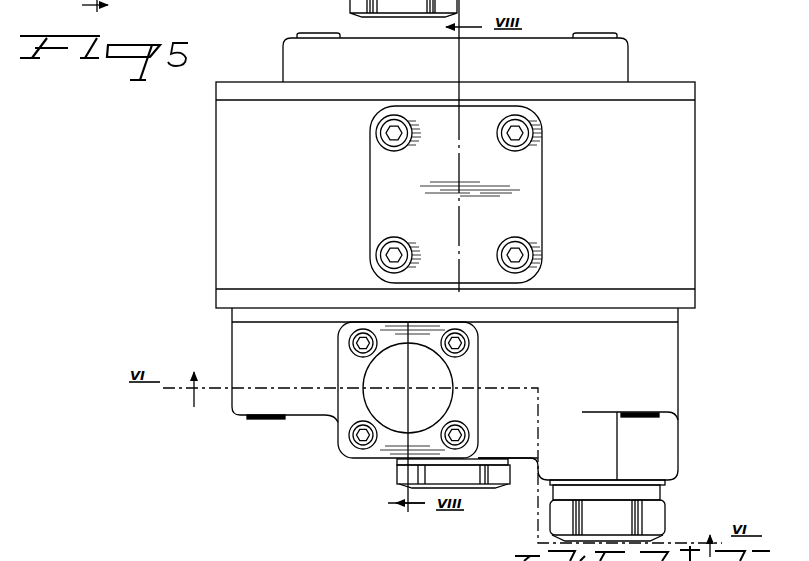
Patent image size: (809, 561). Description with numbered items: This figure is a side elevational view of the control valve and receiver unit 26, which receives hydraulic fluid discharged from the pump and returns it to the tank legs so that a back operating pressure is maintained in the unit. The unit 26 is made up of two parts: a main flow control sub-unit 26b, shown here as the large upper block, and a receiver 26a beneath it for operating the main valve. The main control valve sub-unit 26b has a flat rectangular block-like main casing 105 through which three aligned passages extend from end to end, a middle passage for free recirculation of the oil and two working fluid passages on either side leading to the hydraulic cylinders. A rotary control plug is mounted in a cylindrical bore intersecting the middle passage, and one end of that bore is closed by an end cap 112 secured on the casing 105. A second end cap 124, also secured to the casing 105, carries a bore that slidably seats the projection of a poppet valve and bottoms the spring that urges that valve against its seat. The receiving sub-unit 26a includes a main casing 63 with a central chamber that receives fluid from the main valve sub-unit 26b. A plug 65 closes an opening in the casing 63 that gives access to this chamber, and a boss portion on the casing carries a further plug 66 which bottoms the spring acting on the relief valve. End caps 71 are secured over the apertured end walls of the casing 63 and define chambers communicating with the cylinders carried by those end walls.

The end cap 112 is at (608, 62).
The control valve and receiver unit 26 is at (702, 106).
The main casing 105 is at (660, 146).
The main flow control sub-unit 26b is at (672, 222).
The end cap 124 is at (520, 185).
The receiver 26a is at (664, 367).
The end caps 71 is at (340, 420).
The plug 65 is at (398, 472).
The main casing 63 is at (520, 430).
The plug 66 is at (652, 520).